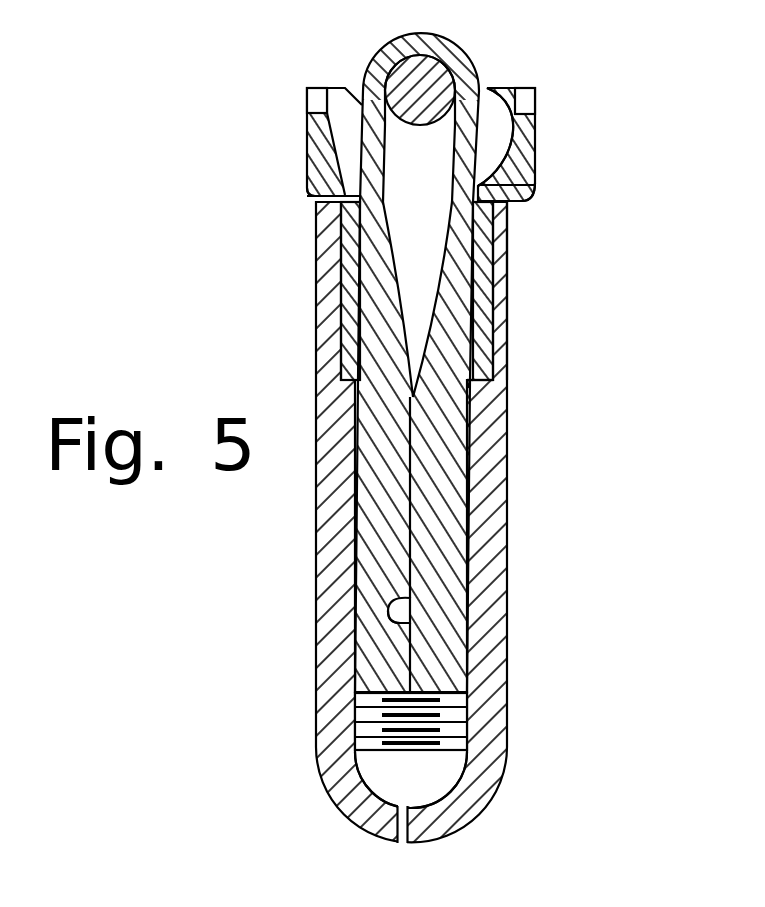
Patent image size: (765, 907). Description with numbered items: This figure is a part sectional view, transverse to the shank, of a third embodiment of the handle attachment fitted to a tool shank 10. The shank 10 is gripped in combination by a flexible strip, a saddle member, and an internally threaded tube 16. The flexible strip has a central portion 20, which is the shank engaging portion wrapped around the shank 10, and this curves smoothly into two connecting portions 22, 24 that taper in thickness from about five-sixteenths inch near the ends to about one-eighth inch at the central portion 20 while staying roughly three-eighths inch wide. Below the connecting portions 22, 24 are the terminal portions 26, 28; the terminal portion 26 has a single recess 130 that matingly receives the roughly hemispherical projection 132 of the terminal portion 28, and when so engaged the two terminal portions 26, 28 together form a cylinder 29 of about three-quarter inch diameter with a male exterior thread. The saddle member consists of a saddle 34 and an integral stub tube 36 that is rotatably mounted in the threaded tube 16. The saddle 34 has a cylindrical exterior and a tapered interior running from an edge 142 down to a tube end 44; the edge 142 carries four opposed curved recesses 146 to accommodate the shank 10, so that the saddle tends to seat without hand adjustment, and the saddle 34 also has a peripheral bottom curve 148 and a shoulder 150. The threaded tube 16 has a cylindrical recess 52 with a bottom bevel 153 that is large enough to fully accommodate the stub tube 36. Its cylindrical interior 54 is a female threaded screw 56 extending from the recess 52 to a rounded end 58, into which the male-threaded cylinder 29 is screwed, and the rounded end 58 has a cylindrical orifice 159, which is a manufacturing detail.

The tool shank 10 is at (425, 88).
The internally threaded tube 16 is at (490, 470).
The central portion 20 is at (397, 40).
The connecting portion 22 is at (382, 311).
The connecting portion 24 is at (443, 317).
The terminal portion 26 is at (377, 544).
The terminal portion 28 is at (440, 520).
The cylinder 29 is at (392, 690).
The saddle 34 is at (518, 147).
The stub tube 36 is at (495, 353).
The tube end 44 is at (538, 182).
The cylindrical recess 52 is at (497, 372).
The cylindrical interior 54 is at (477, 660).
The female threaded screw 56 is at (450, 730).
The rounded end 58 is at (470, 787).
The single recess 130 is at (393, 627).
The hemispherical projection 132 is at (394, 613).
The edge 142 is at (520, 88).
The curved recesses 146 is at (362, 103).
The peripheral bottom curve 148 is at (306, 197).
The shoulder 150 is at (515, 230).
The bottom bevel 153 is at (480, 382).
The cylindrical orifice 159 is at (400, 845).